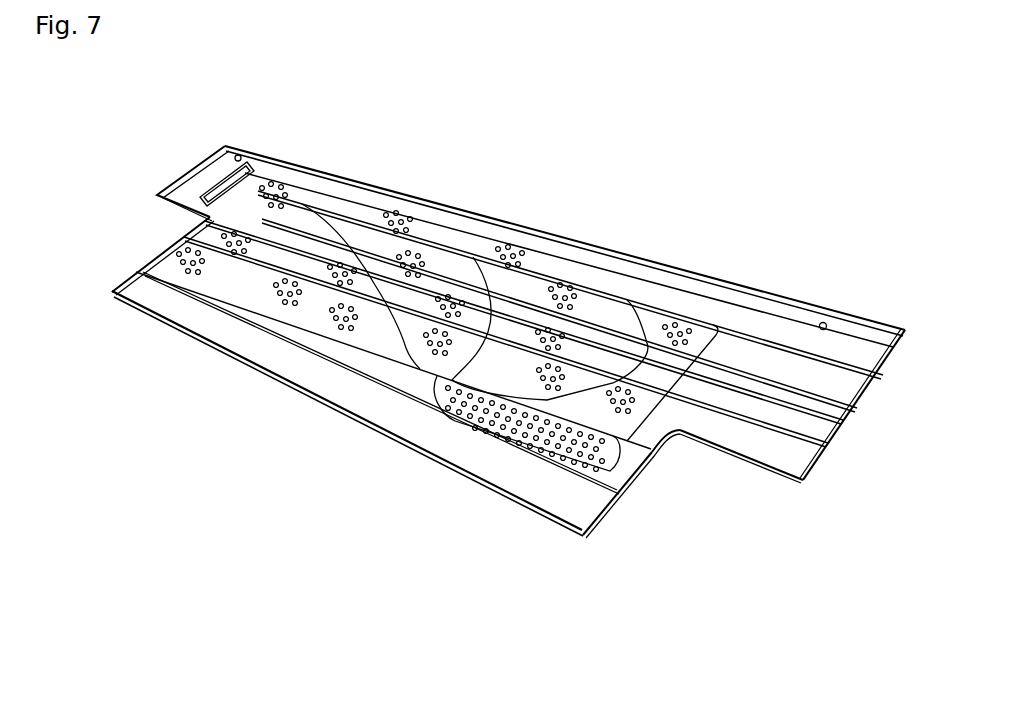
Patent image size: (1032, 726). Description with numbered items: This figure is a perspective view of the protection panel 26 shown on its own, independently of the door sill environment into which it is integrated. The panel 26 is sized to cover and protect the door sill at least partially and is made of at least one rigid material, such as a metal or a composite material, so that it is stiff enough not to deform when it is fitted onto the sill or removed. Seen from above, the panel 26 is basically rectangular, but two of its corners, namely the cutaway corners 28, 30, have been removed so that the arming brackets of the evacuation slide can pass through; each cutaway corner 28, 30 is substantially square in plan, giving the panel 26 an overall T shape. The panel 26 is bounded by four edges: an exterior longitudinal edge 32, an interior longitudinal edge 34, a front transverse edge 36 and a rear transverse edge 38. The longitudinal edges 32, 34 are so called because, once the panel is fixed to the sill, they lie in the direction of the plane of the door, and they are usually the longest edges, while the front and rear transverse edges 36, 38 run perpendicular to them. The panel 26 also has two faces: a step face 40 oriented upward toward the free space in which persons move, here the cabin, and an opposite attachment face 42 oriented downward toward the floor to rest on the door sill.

The panel 26 is at (785, 320).
The cutaway corner 28 is at (163, 225).
The cutaway corner 30 is at (680, 440).
The exterior longitudinal edge 32 is at (485, 486).
The interior longitudinal edge 34 is at (590, 247).
The front transverse edge 36 is at (182, 186).
The rear transverse edge 38 is at (840, 438).
The step face 40 is at (285, 352).
The attachment face 42 is at (355, 424).